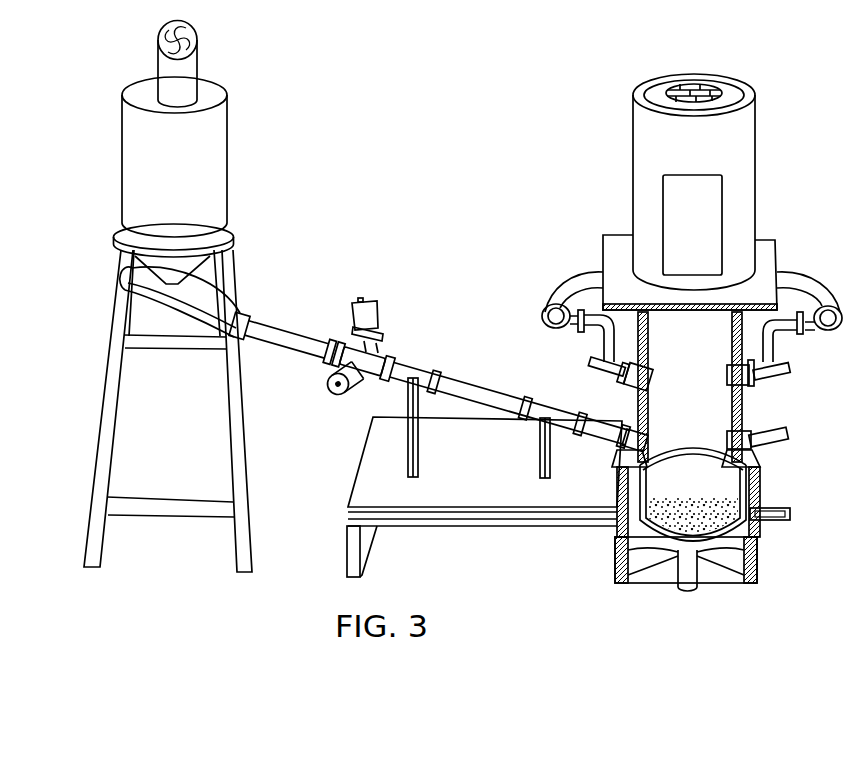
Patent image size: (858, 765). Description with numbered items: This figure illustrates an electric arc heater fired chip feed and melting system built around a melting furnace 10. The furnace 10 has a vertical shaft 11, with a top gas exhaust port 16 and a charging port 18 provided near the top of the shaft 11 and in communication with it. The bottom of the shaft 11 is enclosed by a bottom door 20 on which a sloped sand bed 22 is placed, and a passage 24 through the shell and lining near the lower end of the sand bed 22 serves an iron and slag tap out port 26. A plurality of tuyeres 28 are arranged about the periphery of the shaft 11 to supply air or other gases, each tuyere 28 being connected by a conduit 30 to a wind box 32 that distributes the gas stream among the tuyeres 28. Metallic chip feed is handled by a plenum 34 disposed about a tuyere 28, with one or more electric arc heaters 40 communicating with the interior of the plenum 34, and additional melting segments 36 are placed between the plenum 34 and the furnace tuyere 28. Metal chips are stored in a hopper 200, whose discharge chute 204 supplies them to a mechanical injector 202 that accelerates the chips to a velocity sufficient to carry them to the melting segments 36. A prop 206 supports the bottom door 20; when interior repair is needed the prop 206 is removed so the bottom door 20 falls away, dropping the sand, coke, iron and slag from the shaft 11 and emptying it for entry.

The melting furnace 10 is at (793, 216).
The vertical shaft 11 is at (698, 366).
The top gas exhaust port 16 is at (686, 86).
The charging port 18 is at (672, 205).
The bottom door 20 is at (627, 556).
The sloped sand bed 22 is at (657, 510).
The passage 24 is at (742, 502).
The iron and slag tap out port 26 is at (782, 507).
The tuyeres 28 is at (728, 446).
The conduit 30 is at (600, 333).
The wind box 32 is at (546, 297).
The plenum 34 is at (372, 359).
The melting segment 36 is at (483, 389).
The electric arc heater 40 is at (379, 317).
The hopper 200 is at (122, 165).
The mechanical injector 202 is at (206, 293).
The discharge chute 204 is at (116, 293).
The prop 206 is at (693, 566).